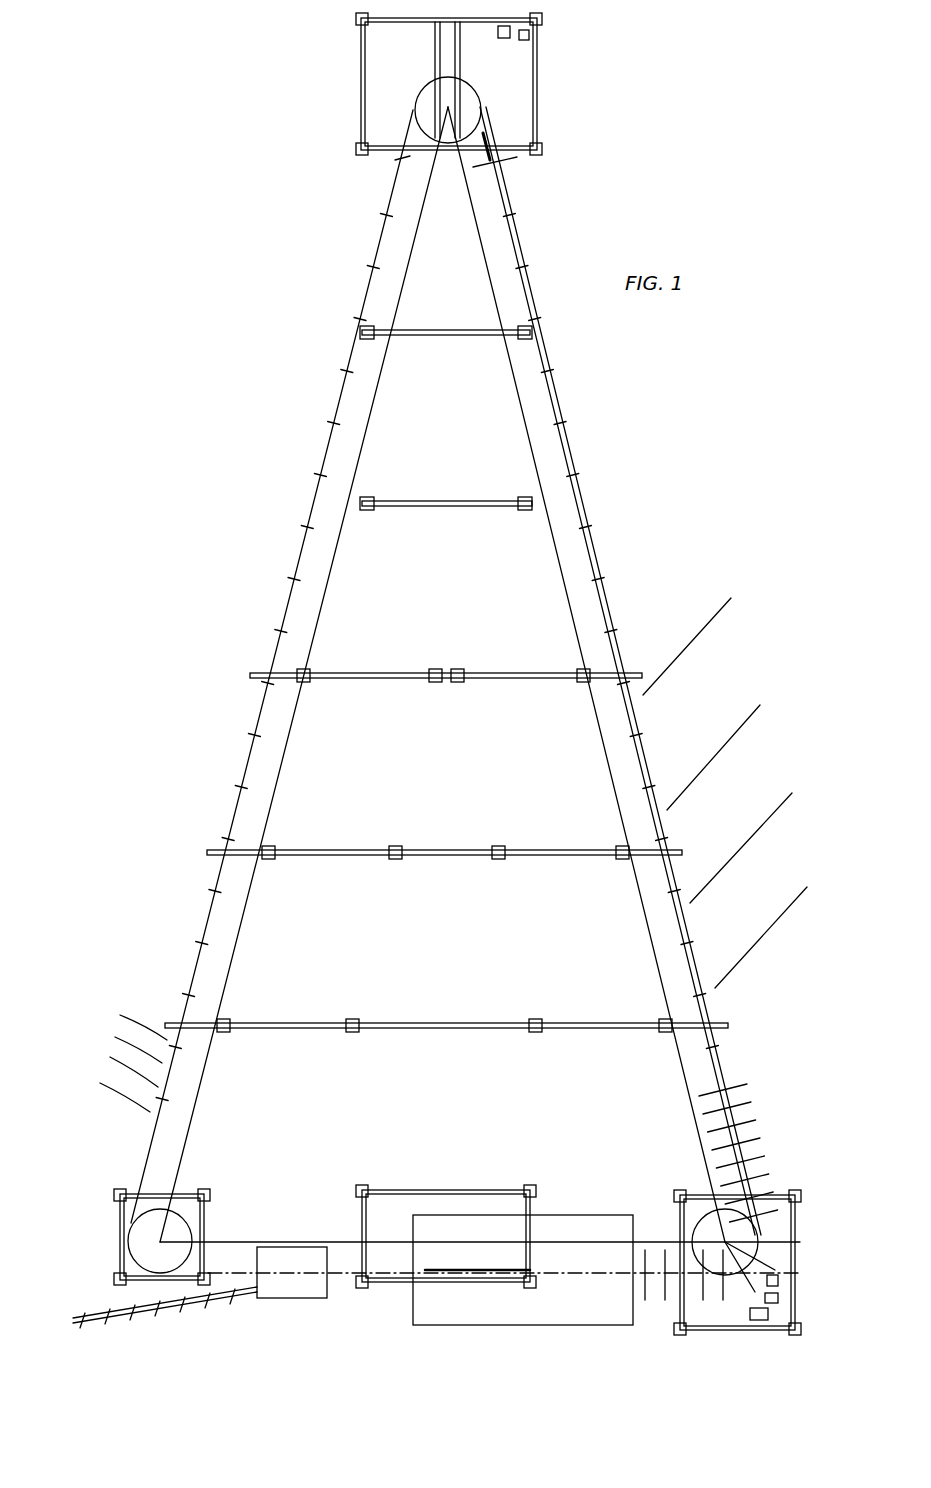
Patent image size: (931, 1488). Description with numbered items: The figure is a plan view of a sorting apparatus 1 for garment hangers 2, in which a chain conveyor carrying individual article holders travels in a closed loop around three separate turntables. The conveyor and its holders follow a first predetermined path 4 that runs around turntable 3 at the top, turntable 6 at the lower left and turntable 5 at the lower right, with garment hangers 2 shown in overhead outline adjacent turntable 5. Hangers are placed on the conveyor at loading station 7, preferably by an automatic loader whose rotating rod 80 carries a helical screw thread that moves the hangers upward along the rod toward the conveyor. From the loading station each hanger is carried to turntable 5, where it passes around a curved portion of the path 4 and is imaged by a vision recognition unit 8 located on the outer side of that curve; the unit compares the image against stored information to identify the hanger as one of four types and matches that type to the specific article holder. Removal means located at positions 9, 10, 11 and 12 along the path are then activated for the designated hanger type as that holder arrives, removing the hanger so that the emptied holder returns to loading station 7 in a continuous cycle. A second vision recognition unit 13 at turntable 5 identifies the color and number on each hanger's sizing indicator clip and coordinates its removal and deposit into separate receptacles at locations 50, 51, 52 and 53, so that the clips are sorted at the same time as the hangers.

The sorting apparatus 1 is at (198, 703).
The garment hangers 2 is at (745, 1112).
The turntable 3 is at (485, 100).
The first predetermined path 4 is at (283, 622).
The turntable 5 is at (760, 1248).
The turntable 6 is at (128, 1242).
The loading station 7 is at (313, 1298).
The vision recognition unit 8 is at (778, 1298).
The removal means position 9 is at (715, 990).
The removal means position 10 is at (693, 903).
The removal means position 11 is at (670, 810).
The removal means position 12 is at (768, 1314).
The second vision recognition unit 13 is at (778, 1280).
The receptacle location 50 is at (165, 1035).
The receptacle location 51 is at (162, 1060).
The receptacle location 52 is at (157, 1087).
The receptacle location 53 is at (150, 1113).
The rod 80 is at (98, 1315).